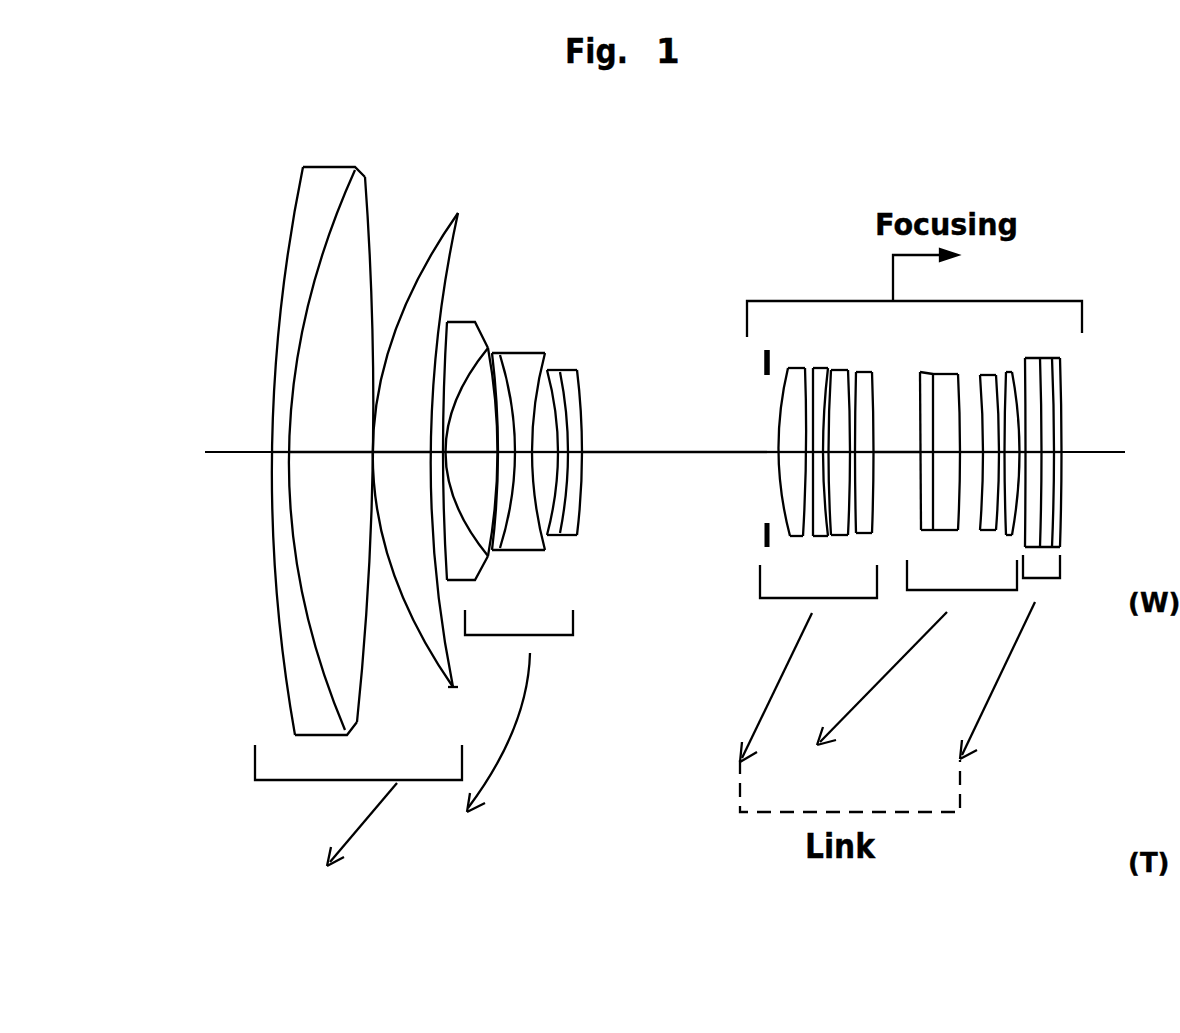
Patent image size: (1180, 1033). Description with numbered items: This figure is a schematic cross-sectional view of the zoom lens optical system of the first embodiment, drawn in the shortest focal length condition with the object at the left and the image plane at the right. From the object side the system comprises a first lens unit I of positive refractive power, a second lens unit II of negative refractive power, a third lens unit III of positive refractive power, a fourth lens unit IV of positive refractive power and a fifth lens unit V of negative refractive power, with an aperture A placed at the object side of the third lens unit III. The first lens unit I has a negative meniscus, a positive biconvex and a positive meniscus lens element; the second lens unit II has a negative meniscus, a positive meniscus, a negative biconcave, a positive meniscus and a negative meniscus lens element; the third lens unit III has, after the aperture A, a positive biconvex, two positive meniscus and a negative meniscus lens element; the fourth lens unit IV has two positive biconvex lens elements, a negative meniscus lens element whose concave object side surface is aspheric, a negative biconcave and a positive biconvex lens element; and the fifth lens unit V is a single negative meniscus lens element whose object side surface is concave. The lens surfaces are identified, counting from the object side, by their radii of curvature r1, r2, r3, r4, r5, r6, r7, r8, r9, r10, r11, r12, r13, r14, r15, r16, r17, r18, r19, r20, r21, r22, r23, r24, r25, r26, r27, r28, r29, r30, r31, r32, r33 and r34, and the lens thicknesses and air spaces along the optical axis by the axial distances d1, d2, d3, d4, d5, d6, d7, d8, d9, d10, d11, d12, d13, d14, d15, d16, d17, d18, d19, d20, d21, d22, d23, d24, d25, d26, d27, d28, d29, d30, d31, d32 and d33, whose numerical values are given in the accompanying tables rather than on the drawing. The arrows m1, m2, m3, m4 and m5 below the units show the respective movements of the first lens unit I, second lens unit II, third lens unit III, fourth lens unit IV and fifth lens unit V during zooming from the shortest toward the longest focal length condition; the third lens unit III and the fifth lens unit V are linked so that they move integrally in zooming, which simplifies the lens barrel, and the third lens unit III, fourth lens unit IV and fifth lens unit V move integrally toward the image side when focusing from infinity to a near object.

The radius of curvature of first lens surface r1 is at (295, 198).
The radius of curvature of second lens surface r2 is at (345, 205).
The radius of curvature of third lens surface r3 is at (372, 205).
The radius of curvature of fourth lens surface r4 is at (437, 243).
The radius of curvature of fifth lens surface r5 is at (462, 238).
The radius of curvature of sixth lens surface r6 is at (472, 321).
The radius of curvature of seventh lens surface r7 is at (490, 347).
The radius of curvature of eighth lens surface r8 is at (493, 353).
The radius of curvature of ninth lens surface r9 is at (520, 358).
The radius of curvature of tenth lens surface r10 is at (548, 356).
The radius of curvature of eleventh lens surface r11 is at (556, 372).
The radius of curvature of twelfth lens surface r12 is at (562, 400).
The radius of curvature of thirteenth lens surface r13 is at (570, 408).
The radius of curvature of fourteenth lens surface r14 is at (583, 415).
The radius of curvature of fifteenth lens surface r15 is at (763, 364).
The radius of curvature of sixteenth lens surface r16 is at (788, 367).
The radius of curvature of seventeenth lens surface r17 is at (805, 368).
The radius of curvature of eighteenth lens surface r18 is at (815, 367).
The radius of curvature of nineteenth lens surface r19 is at (846, 342).
The radius of curvature of twentieth lens surface r20 is at (833, 369).
The radius of curvature of twenty-first lens surface r21 is at (849, 370).
The radius of curvature of twenty-second lens surface r22 is at (857, 375).
The radius of curvature of twenty-third lens surface r23 is at (873, 374).
The radius of curvature of twenty-fourth lens surface r24 is at (921, 372).
The radius of curvature of twenty-fifth lens surface r25 is at (934, 376).
The radius of curvature of twenty-sixth lens surface r26 is at (959, 374).
The radius of curvature of twenty-seventh lens surface r27 is at (980, 376).
The radius of curvature of twenty-eighth lens surface r28 is at (997, 375).
The radius of curvature of twenty-ninth lens surface r29 is at (1015, 362).
The radius of curvature of thirtieth lens surface r30 is at (1013, 372).
The radius of curvature of thirty-first lens surface r31 is at (1050, 362).
The radius of curvature of thirty-second lens surface r32 is at (1041, 362).
The radius of curvature of thirty-third lens surface r33 is at (1053, 372).
The radius of curvature of thirty-fourth lens surface r34 is at (1061, 375).
The first axial distance d1 is at (283, 441).
The second axial distance d2 is at (331, 436).
The third axial distance d3 is at (388, 310).
The fourth axial distance d4 is at (402, 436).
The fifth axial distance d5 is at (432, 440).
The sixth axial distance d6 is at (453, 374).
The seventh axial distance d7 is at (471, 436).
The eighth axial distance d8 is at (483, 575).
The ninth axial distance d9 is at (518, 562).
The tenth axial distance d10 is at (540, 532).
The eleventh axial distance d11 is at (556, 516).
The twelfth axial distance d12 is at (568, 490).
The thirteenth axial distance d13 is at (578, 462).
The fourteenth axial distance d14 is at (674, 436).
The fifteenth axial distance d15 is at (754, 436).
The sixteenth axial distance d16 is at (795, 446).
The seventeenth axial distance d17 is at (810, 541).
The eighteenth axial distance d18 is at (818, 548).
The nineteenth axial distance d19 is at (832, 541).
The twentieth axial distance d20 is at (860, 521).
The twenty-first axial distance d21 is at (865, 496).
The twenty-second axial distance d22 is at (866, 467).
The twenty-third axial distance d23 is at (896, 436).
The twenty-fourth axial distance d24 is at (928, 527).
The twenty-fifth axial distance d25 is at (945, 536).
The twenty-sixth axial distance d26 is at (947, 523).
The twenty-seventh axial distance d27 is at (986, 453).
The twenty-eighth axial distance d28 is at (1010, 447).
The twenty-ninth axial distance d29 is at (990, 529).
The thirtieth axial distance d30 is at (1008, 546).
The thirty-first axial distance d31 is at (1025, 506).
The thirty-second axial distance d32 is at (1035, 487).
The thirty-third axial distance d33 is at (1045, 469).
The aperture A is at (760, 541).
The first lens unit I is at (358, 782).
The second lens unit II is at (517, 644).
The third lens unit III is at (818, 600).
The fourth lens unit IV is at (962, 593).
The fifth lens unit V is at (1052, 585).
The arrow showing movement of first lens unit m1 is at (366, 822).
The arrow showing movement of second lens unit m2 is at (507, 740).
The arrow showing movement of third lens unit m3 is at (778, 679).
The arrow showing movement of fourth lens unit m4 is at (885, 677).
The arrow showing movement of fifth lens unit m5 is at (998, 673).